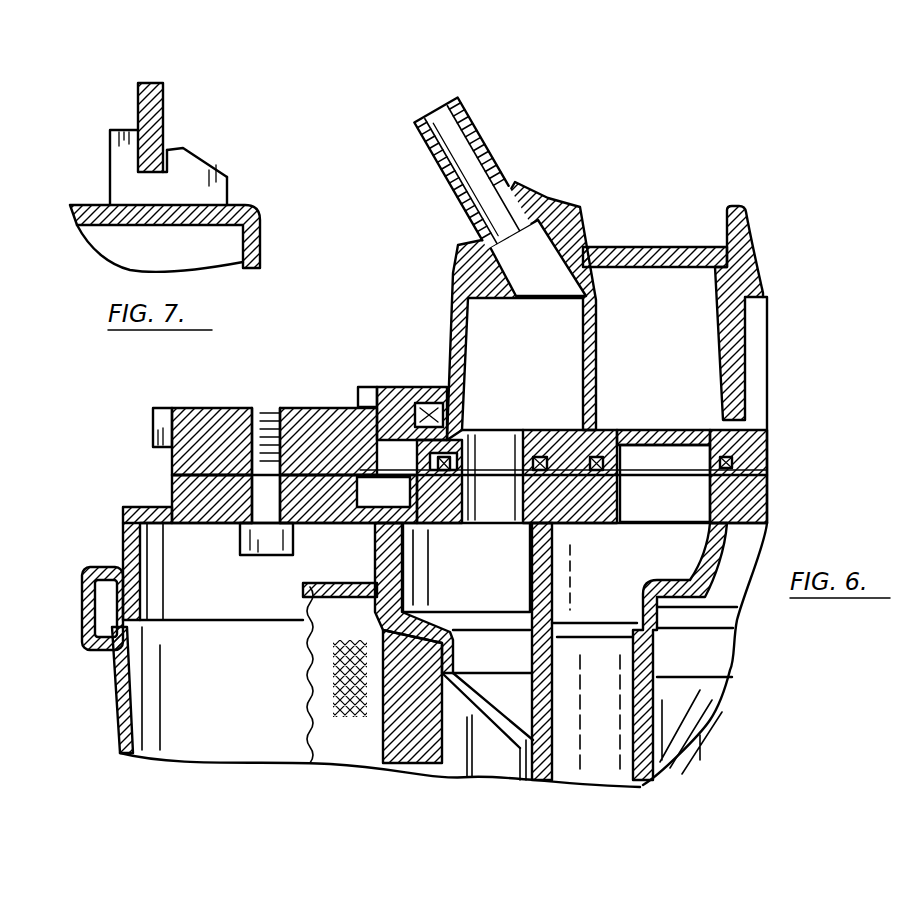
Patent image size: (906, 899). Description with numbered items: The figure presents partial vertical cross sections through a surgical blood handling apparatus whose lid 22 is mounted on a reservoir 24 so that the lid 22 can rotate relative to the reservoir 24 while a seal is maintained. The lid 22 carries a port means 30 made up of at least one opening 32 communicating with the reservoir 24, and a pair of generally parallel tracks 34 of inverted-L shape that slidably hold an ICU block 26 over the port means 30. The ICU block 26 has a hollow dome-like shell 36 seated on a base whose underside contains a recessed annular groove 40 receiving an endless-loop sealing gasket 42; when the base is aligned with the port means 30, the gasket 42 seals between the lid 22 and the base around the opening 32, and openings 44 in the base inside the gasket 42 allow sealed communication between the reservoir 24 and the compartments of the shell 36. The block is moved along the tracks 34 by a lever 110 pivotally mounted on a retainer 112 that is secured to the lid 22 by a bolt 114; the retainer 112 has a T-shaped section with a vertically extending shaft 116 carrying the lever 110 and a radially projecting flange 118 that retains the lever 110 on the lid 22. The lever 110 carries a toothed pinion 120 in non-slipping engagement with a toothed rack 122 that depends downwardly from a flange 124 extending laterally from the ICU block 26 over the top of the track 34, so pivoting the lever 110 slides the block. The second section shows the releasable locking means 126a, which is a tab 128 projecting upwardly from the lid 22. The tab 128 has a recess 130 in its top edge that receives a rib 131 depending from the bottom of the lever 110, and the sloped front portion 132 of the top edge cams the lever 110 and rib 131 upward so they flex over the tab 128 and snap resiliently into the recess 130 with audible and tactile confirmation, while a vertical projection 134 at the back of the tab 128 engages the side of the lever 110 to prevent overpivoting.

In FIG. 6, the lid 22 is at (90, 586).
In FIG. 6, the reservoir 24 is at (118, 745).
In FIG. 6, the ICU block 26 is at (643, 247).
In FIG. 6, the port means 30 is at (633, 540).
In FIG. 6, the opening 32 is at (690, 535).
In FIG. 6, the tracks 34 is at (415, 405).
In FIG. 6, the shell 36 is at (745, 262).
In FIG. 6, the annular groove 40 is at (540, 458).
In FIG. 6, the sealing gasket 42 is at (603, 458).
In FIG. 6, the openings 44 is at (493, 440).
In FIG. 7, the lever 110 is at (146, 83).
In FIG. 6, the lever 110 is at (193, 408).
In FIG. 6, the retainer 112 is at (262, 408).
In FIG. 6, the bolt 114 is at (262, 553).
In FIG. 6, the shaft 116 is at (235, 458).
In FIG. 6, the flange 118 is at (318, 408).
In FIG. 6, the toothed pinion 120 is at (155, 422).
In FIG. 6, the toothed rack 122 is at (352, 522).
In FIG. 6, the flange 124 is at (428, 390).
In FIG. 7, the locking means 126a is at (230, 194).
In FIG. 7, the tab 128 is at (150, 194).
In FIG. 7, the recess 130 is at (168, 150).
In FIG. 7, the rib 131 is at (146, 157).
In FIG. 7, the front portion 132 is at (215, 166).
In FIG. 7, the vertical projection 134 is at (125, 130).